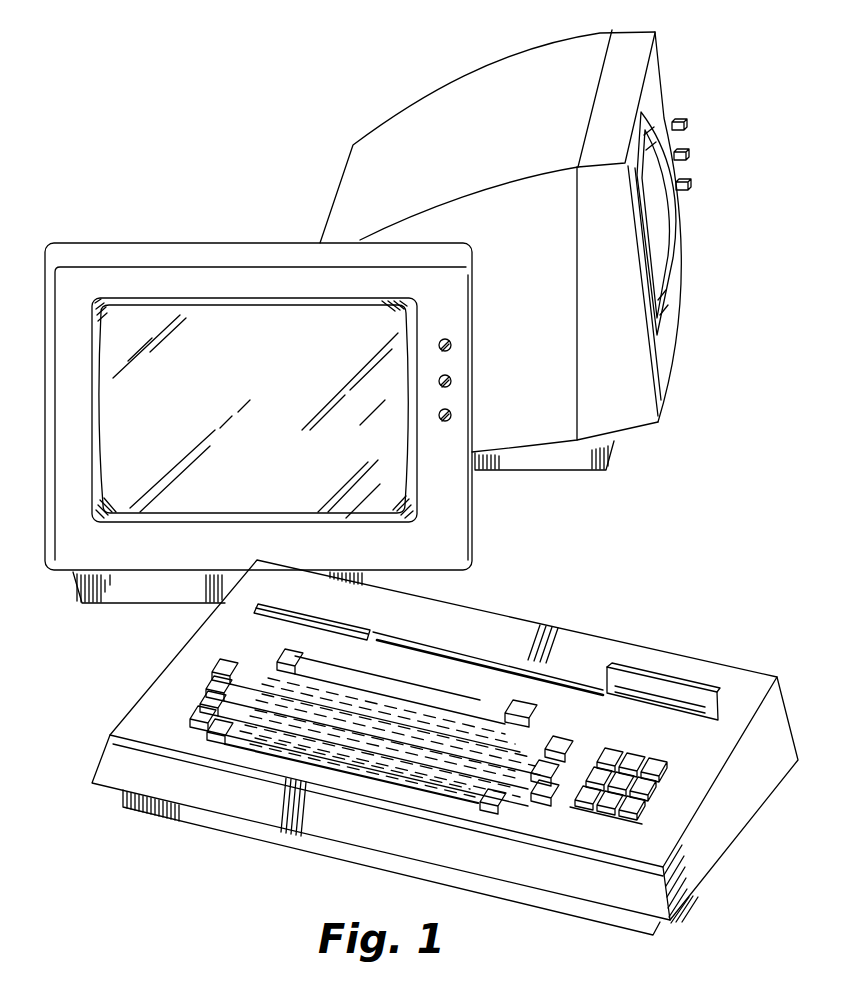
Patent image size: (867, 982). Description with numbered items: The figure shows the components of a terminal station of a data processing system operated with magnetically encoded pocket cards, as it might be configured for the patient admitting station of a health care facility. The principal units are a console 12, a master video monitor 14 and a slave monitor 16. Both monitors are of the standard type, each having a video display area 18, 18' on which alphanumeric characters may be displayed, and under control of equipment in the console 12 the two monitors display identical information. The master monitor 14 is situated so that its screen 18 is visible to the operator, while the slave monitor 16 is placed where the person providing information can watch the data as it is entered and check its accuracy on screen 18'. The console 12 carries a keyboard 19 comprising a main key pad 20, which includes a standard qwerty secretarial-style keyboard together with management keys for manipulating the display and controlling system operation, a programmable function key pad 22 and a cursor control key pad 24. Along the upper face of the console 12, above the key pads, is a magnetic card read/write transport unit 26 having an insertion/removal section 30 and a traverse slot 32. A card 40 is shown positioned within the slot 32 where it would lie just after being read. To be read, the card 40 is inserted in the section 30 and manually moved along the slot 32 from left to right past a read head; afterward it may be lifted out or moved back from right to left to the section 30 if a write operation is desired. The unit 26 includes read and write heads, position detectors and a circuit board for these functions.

The console 12 is at (235, 793).
The master video monitor 14 is at (177, 243).
The slave monitor 16 is at (668, 80).
The video display area 18 is at (254, 360).
The video display area 18' is at (695, 223).
The keyboard 19 is at (190, 681).
The main key pad 20 is at (185, 707).
The programmable function key pad 22 is at (540, 720).
The cursor control key pad 24 is at (628, 755).
The magnetic card read/write transport unit 26 is at (558, 674).
The insertion/removal section 30 is at (290, 610).
The traverse slot 32 is at (447, 652).
The card 40 is at (671, 675).